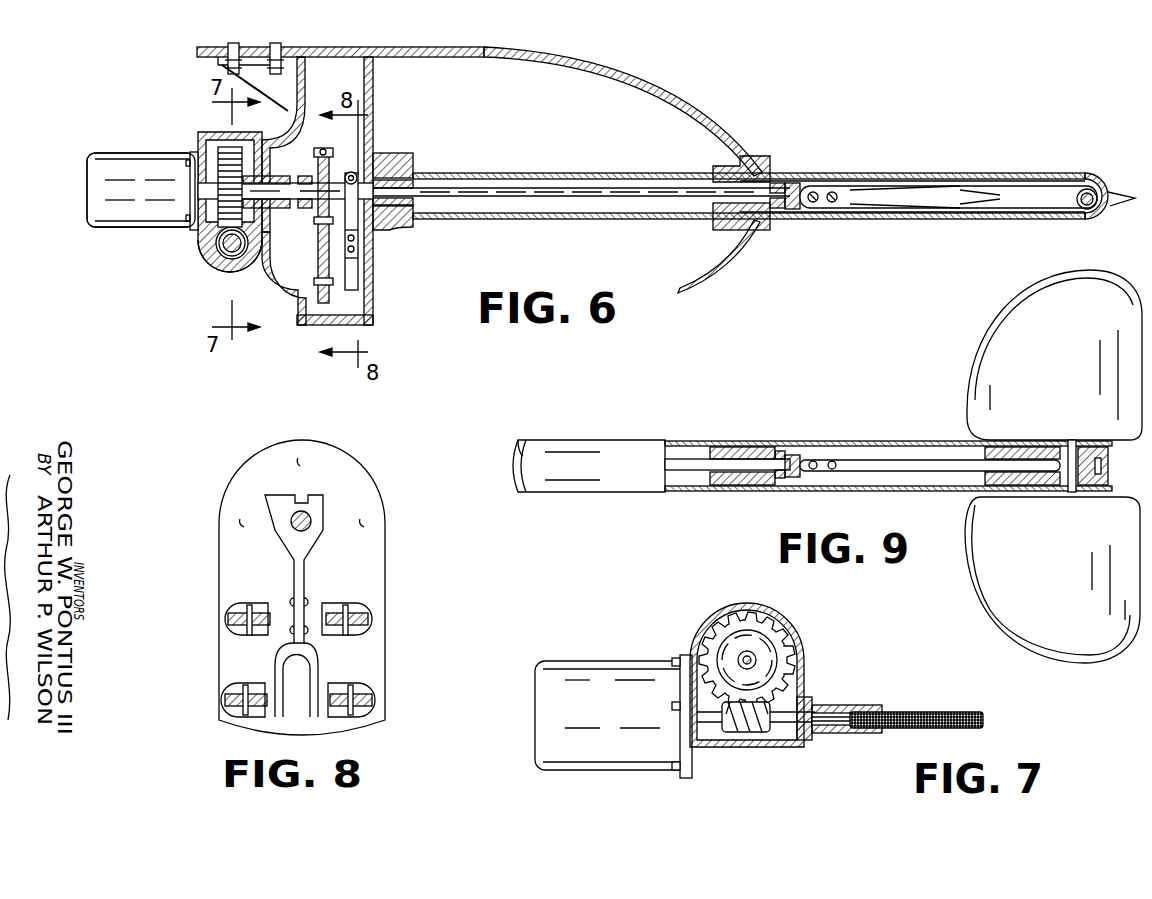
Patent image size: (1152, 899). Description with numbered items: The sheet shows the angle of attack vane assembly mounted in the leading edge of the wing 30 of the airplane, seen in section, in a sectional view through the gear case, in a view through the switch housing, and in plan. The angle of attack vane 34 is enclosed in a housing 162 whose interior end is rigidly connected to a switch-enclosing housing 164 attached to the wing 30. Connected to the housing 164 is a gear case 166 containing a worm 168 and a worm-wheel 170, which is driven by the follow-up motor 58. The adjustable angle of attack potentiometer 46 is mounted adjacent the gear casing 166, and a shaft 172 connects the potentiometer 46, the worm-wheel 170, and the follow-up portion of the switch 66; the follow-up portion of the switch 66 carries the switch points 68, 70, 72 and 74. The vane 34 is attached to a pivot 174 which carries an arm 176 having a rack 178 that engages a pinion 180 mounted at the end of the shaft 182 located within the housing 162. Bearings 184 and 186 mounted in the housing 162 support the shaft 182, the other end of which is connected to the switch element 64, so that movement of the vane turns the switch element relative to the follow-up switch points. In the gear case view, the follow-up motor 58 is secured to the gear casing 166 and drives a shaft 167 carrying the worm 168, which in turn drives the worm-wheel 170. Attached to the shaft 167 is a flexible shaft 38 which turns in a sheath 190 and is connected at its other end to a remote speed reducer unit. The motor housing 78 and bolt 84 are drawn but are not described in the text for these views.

In FIG. 6, the wing 30 is at (730, 122).
In FIG. 9, the angle of attack vane 34 is at (1104, 296).
In FIG. 7, the flexible shaft 38 is at (1000, 703).
In FIG. 6, the adjustable angle of attack potentiometer 46 is at (153, 228).
In FIG. 6, the motor housing 78 is at (153, 228).
In FIG. 7, the follow-up motor 58 is at (593, 648).
In FIG. 6, the switch element 64 is at (358, 238).
In FIG. 8, the switch element 64 is at (303, 615).
In FIG. 6, the follow-up portion of the switch 66 is at (318, 258).
In FIG. 8, the follow-up portion of the switch 66 is at (389, 508).
In FIG. 8, the switch point 68 is at (357, 604).
In FIG. 8, the switch point 70 is at (359, 691).
In FIG. 8, the switch point 72 is at (243, 600).
In FIG. 8, the switch point 74 is at (241, 689).
In FIG. 6, the bolt 84 is at (226, 250).
In FIG. 6, the housing 162 is at (948, 178).
In FIG. 9, the housing 162 is at (842, 440).
In FIG. 6, the switch-enclosing housing 164 is at (378, 128).
In FIG. 6, the gear case 166 is at (206, 132).
In FIG. 7, the gear case 166 is at (762, 606).
In FIG. 7, the shaft 167 is at (710, 725).
In FIG. 6, the worm 168 is at (212, 276).
In FIG. 7, the worm 168 is at (758, 734).
In FIG. 6, the worm-wheel 170 is at (212, 245).
In FIG. 7, the worm-wheel 170 is at (804, 645).
In FIG. 6, the shaft 172 is at (272, 208).
In FIG. 6, the pivot 174 is at (1095, 180).
In FIG. 9, the pivot 174 is at (1080, 440).
In FIG. 6, the arm 176 is at (898, 210).
In FIG. 9, the arm 176 is at (895, 462).
In FIG. 6, the rack 178 is at (790, 182).
In FIG. 9, the rack 178 is at (795, 480).
In FIG. 6, the pinion 180 is at (796, 210).
In FIG. 9, the pinion 180 is at (826, 428).
In FIG. 6, the shaft 182 is at (500, 198).
In FIG. 9, the shaft 182 is at (700, 430).
In FIG. 8, the shaft 182 is at (314, 515).
In FIG. 6, the bearing 184 is at (417, 171).
In FIG. 6, the bearing 186 is at (718, 178).
In FIG. 9, the bearing 186 is at (700, 457).
In FIG. 7, the sheath 190 is at (930, 690).